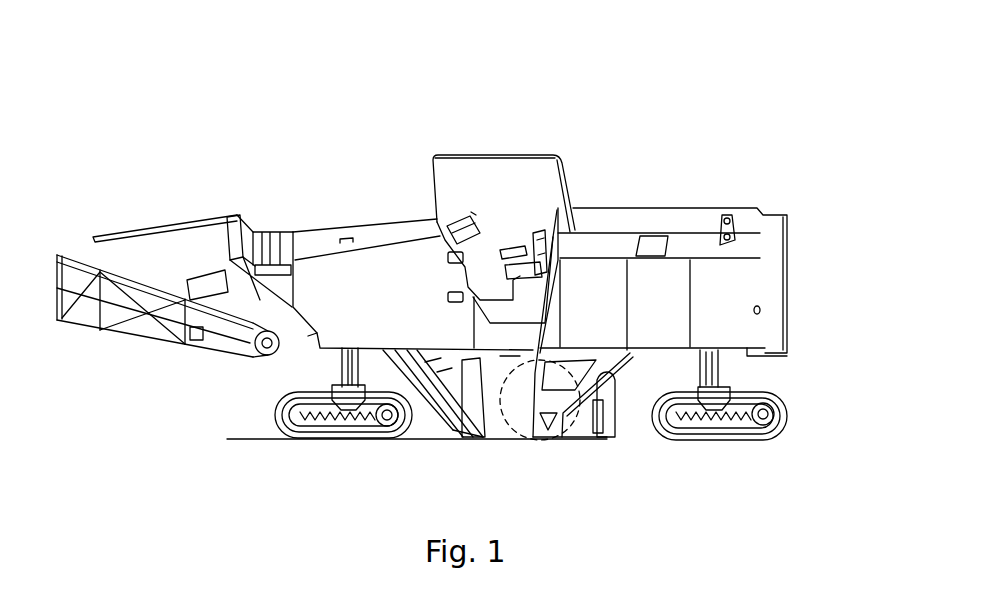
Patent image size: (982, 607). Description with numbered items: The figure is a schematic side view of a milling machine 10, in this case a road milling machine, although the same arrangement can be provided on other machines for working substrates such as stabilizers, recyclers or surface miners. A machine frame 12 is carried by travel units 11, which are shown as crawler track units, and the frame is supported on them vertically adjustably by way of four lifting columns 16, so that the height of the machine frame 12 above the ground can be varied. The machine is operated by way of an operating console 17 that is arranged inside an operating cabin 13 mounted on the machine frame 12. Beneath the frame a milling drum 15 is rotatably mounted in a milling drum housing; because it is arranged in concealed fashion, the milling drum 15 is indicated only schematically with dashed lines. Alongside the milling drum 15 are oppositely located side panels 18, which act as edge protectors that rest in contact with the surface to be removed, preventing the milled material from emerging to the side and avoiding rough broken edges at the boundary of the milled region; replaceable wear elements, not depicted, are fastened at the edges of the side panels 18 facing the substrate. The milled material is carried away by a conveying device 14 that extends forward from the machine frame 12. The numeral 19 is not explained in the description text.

The milling machine 10 is at (200, 100).
The travel units 11 is at (280, 403).
The machine frame 12 is at (697, 300).
The operating cabin 13 is at (537, 157).
The conveying device 14 is at (120, 300).
The milling drum 15 is at (566, 420).
The lifting columns 16 is at (343, 368).
The operating console 17 is at (469, 223).
The side panels 18 is at (498, 420).
The milling drum housing 19 is at (520, 380).